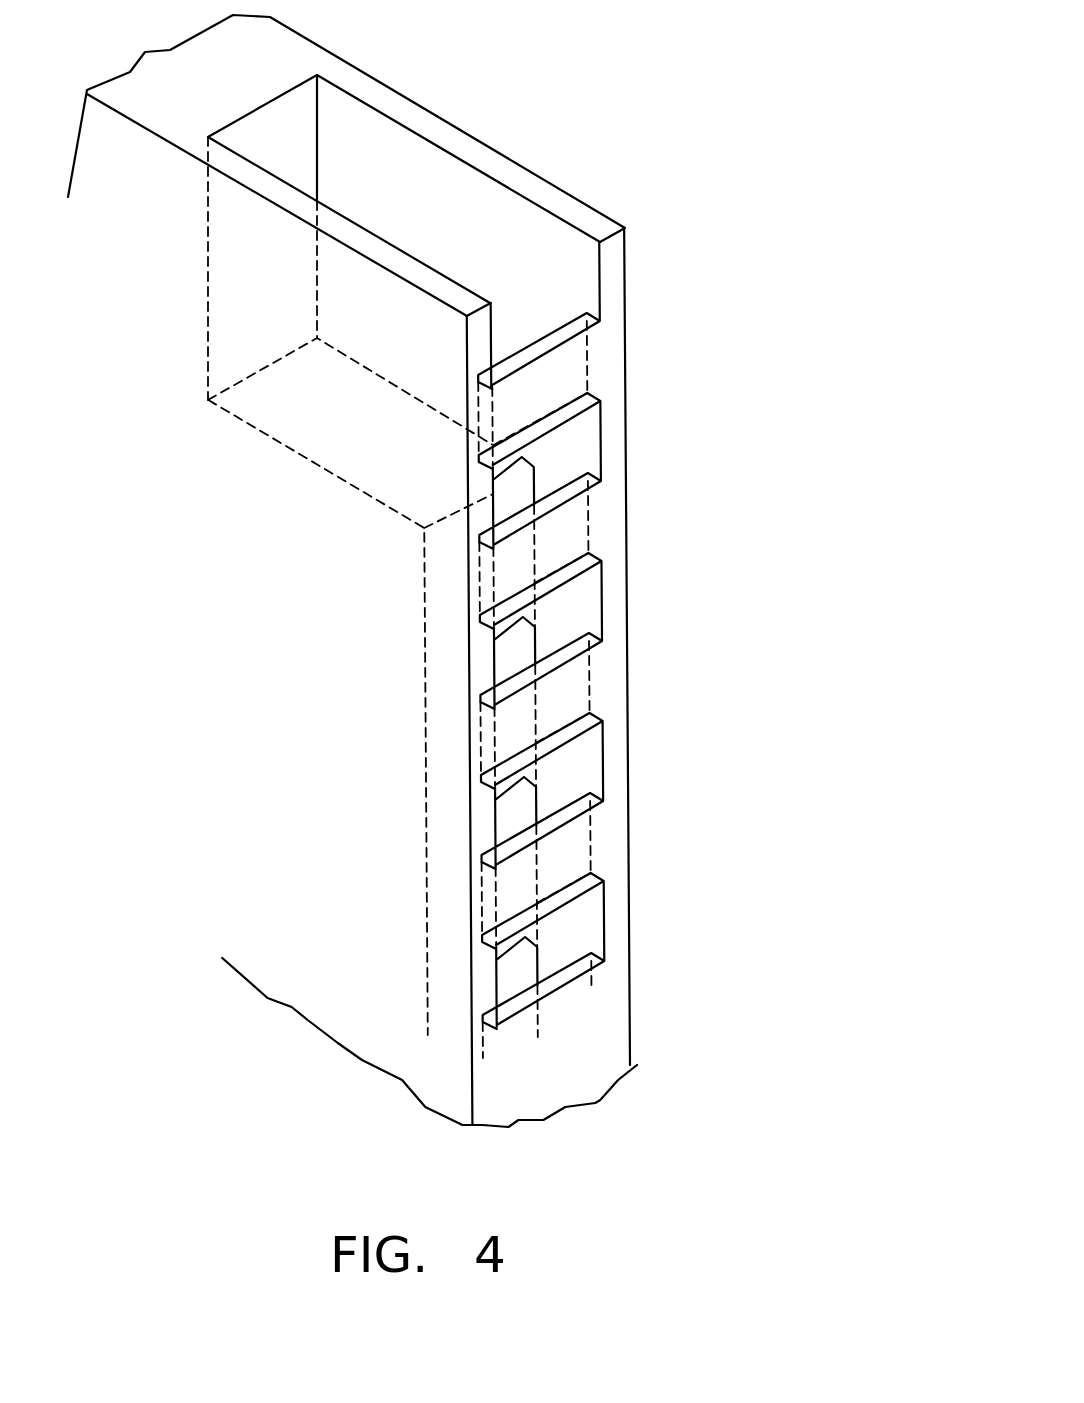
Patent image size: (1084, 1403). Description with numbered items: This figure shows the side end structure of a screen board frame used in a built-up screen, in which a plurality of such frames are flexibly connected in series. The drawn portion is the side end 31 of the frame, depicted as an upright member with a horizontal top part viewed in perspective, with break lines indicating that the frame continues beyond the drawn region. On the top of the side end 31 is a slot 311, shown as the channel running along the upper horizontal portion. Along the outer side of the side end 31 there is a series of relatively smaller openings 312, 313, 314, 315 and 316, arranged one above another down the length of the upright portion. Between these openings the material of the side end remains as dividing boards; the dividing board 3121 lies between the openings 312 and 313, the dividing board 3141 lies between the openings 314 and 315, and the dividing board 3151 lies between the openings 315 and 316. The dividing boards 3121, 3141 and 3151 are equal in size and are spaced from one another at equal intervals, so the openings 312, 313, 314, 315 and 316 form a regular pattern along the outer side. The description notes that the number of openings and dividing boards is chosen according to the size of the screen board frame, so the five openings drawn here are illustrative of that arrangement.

The side end 31 is at (578, 1020).
The slot 311 is at (400, 147).
The opening 312 is at (578, 268).
The dividing board 3121 is at (492, 410).
The opening 313 is at (578, 436).
The opening 314 is at (578, 603).
The dividing board 3141 is at (492, 720).
The opening 315 is at (578, 765).
The dividing board 3151 is at (492, 886).
The opening 316 is at (578, 920).